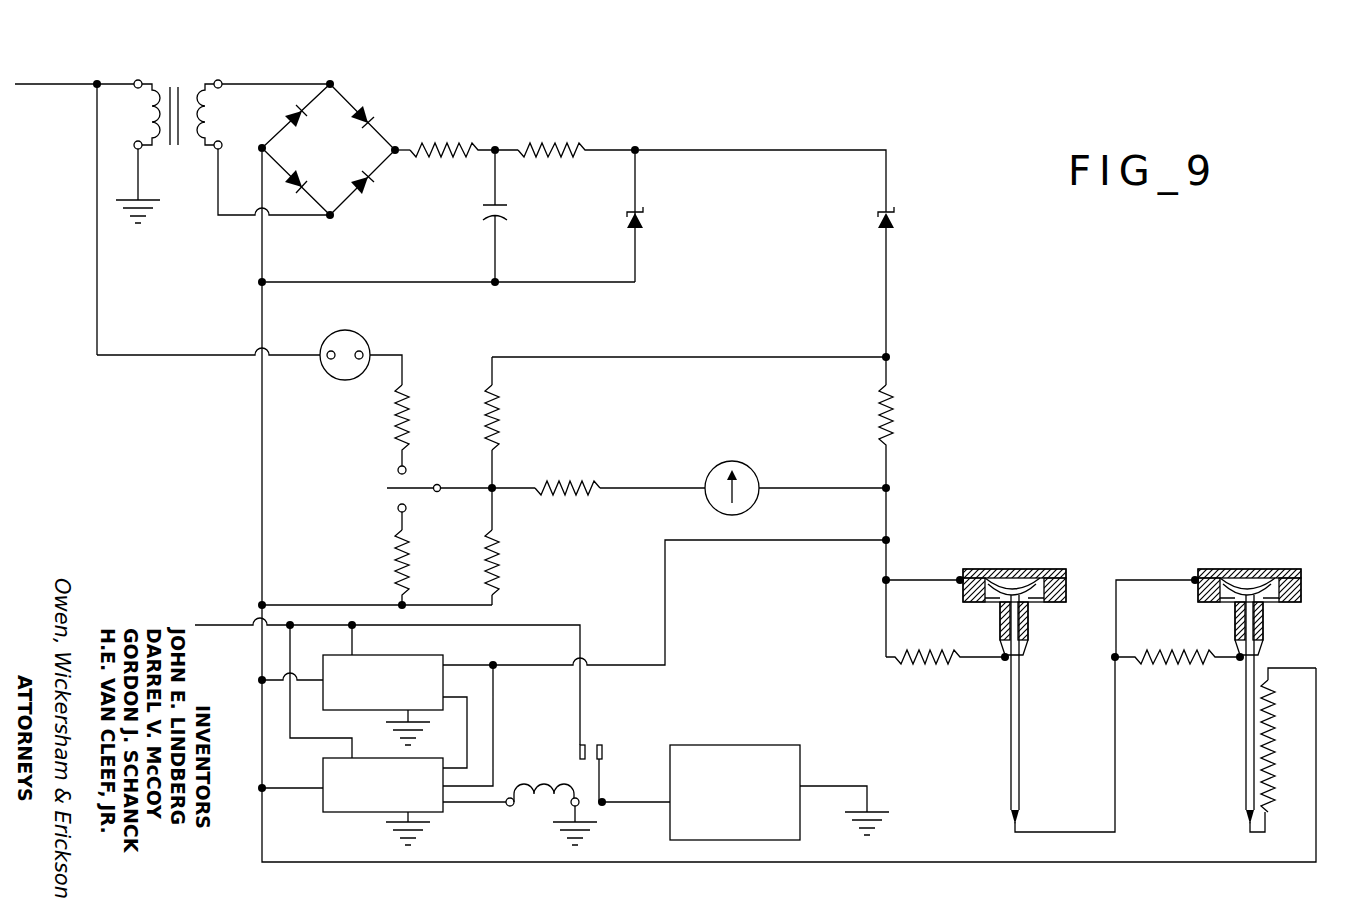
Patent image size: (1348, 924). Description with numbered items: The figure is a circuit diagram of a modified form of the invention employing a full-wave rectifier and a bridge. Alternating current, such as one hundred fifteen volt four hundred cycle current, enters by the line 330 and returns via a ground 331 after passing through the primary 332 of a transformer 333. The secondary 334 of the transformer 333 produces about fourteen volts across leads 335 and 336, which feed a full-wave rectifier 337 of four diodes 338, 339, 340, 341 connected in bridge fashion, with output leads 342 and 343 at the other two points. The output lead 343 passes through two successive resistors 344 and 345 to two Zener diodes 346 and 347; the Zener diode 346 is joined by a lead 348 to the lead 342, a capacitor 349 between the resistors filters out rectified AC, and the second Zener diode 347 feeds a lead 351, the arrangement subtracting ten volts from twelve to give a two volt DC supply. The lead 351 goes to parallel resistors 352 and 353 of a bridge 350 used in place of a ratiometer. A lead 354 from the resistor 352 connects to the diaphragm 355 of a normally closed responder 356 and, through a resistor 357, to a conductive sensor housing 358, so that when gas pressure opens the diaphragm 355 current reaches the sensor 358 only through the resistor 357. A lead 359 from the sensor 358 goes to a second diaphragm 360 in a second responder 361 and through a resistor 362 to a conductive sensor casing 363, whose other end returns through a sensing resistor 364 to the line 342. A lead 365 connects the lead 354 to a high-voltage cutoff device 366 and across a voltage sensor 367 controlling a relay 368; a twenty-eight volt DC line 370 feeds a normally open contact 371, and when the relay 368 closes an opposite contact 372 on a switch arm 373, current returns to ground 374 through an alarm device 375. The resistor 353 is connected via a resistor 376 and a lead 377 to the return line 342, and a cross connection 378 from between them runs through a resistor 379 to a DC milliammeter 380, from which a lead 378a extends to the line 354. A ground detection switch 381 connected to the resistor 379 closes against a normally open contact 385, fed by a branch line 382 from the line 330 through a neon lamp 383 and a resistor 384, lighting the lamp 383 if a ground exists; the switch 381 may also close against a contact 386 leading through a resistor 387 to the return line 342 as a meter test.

The line 330 is at (113, 82).
The ground 331 is at (147, 230).
The primary 332 is at (153, 98).
The transformer 333 is at (179, 86).
The secondary 334 is at (202, 98).
The lead 335 is at (287, 83).
The lead 336 is at (240, 216).
The full-wave rectifier 337 is at (333, 139).
The diode 338 is at (371, 114).
The diode 339 is at (294, 117).
The diode 340 is at (308, 168).
The diode 341 is at (374, 186).
The output lead 342 is at (264, 236).
The output lead 343 is at (403, 149).
The resistor 344 is at (465, 141).
The resistor 345 is at (575, 141).
The Zener diode 346 is at (628, 225).
The Zener diode 347 is at (898, 220).
The lead 348 is at (530, 284).
The capacitor 349 is at (505, 204).
The bridge 350 is at (536, 466).
The lead 351 is at (890, 300).
The resistor 352 is at (895, 416).
The resistor 353 is at (500, 410).
The lead 354 is at (884, 558).
The diaphragm 355 is at (1042, 558).
The responder 356 is at (1023, 574).
The resistor 357 is at (947, 681).
The sensor housing 358 is at (1021, 738).
The lead 359 is at (1040, 832).
The diaphragm 360 is at (1251, 585).
The responder 361 is at (1243, 574).
The resistor 362 is at (1178, 665).
The sensor casing 363 is at (1245, 728).
The sensing resistor 364 is at (1283, 808).
The lead 365 is at (692, 542).
The high-voltage cutoff device 366 is at (438, 656).
The voltage sensor 367 is at (348, 814).
The relay 368 is at (541, 778).
The line 370 is at (556, 629).
The contact 371 is at (588, 744).
The contact 372 is at (603, 744).
The switch arm 373 is at (601, 778).
The ground 374 is at (883, 830).
The alarm device 375 is at (805, 752).
The resistor 376 is at (500, 581).
The lead 377 is at (333, 605).
The cross connection 378 is at (622, 488).
The lead 378a is at (783, 492).
The resistor 379 is at (576, 495).
The DC milliammeter 380 is at (757, 475).
The ground detection switch 381 is at (392, 488).
The branch line 382 is at (160, 354).
The neon lamp 383 is at (362, 340).
The resistor 384 is at (398, 415).
The contact 385 is at (408, 470).
The contact 386 is at (398, 510).
The resistor 387 is at (398, 565).